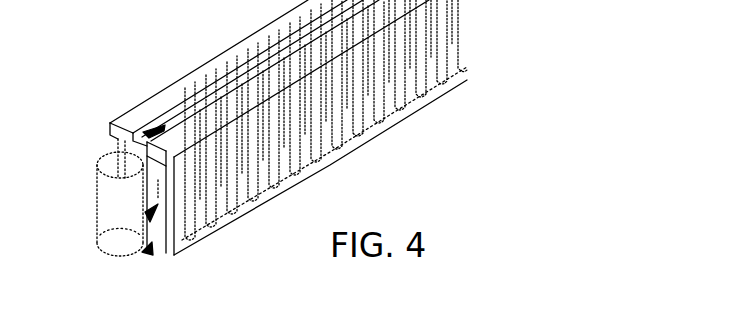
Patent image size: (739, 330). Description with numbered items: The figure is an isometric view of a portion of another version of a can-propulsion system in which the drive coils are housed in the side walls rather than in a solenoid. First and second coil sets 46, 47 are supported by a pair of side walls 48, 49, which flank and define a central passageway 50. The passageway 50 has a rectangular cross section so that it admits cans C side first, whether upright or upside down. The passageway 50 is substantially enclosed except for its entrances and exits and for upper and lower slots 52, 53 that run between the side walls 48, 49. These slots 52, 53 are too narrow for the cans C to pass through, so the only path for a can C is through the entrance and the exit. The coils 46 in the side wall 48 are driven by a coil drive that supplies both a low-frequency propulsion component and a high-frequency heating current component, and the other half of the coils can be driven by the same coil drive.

The first coil set 46 is at (185, 93).
The second coil set 47 is at (225, 205).
The side wall 48 is at (248, 38).
The side wall 49 is at (336, 154).
The central passageway 50 is at (152, 218).
The upper slot 52 is at (146, 132).
The lower slot 53 is at (149, 250).
The can C is at (107, 203).